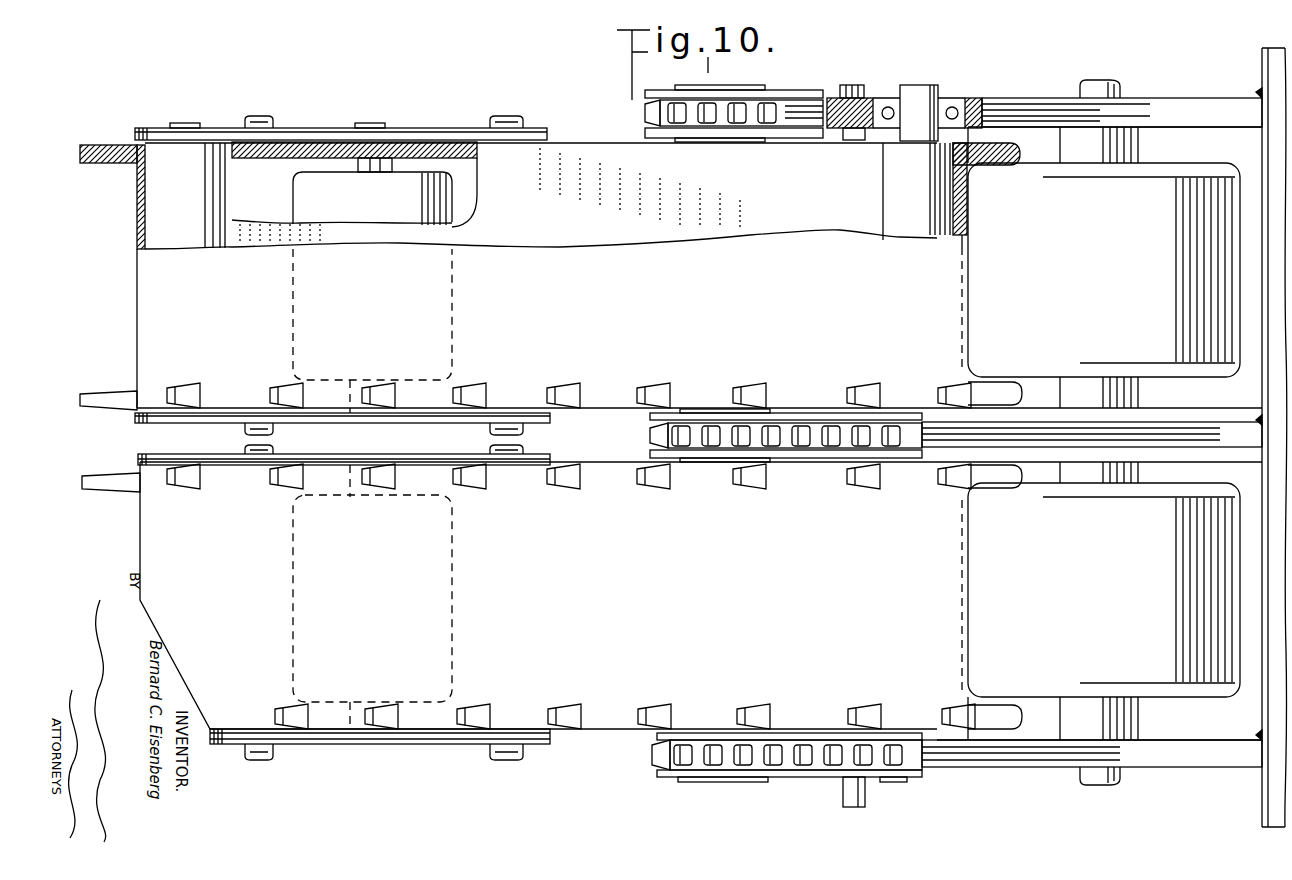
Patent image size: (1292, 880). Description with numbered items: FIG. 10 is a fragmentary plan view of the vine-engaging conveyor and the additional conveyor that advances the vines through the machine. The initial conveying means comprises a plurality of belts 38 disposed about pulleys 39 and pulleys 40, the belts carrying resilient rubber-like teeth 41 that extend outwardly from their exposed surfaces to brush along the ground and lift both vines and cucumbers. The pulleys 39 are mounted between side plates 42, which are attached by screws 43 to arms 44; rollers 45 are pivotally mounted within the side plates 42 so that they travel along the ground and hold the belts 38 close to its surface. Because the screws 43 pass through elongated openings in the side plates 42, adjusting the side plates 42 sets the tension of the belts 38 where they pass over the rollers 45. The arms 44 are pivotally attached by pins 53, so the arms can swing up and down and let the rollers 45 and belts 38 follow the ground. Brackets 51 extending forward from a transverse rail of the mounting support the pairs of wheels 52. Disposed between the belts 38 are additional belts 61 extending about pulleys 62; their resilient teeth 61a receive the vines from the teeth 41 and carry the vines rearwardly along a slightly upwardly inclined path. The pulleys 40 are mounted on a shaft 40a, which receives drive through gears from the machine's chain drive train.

The belts 38 is at (137, 230).
The pulleys 39 is at (212, 181).
The pulleys 40 is at (912, 205).
The shaft 40a is at (925, 90).
The teeth 41 is at (110, 165).
The side plates 42 is at (326, 128).
The screws 43 is at (262, 117).
The arms 44 is at (425, 152).
The rollers 45 is at (452, 280).
The brackets 51 is at (1012, 97).
The wheels 52 is at (1115, 281).
The pins 53 is at (857, 86).
The belts 61 is at (775, 105).
The teeth 61a is at (742, 128).
The pulleys 62 is at (653, 92).